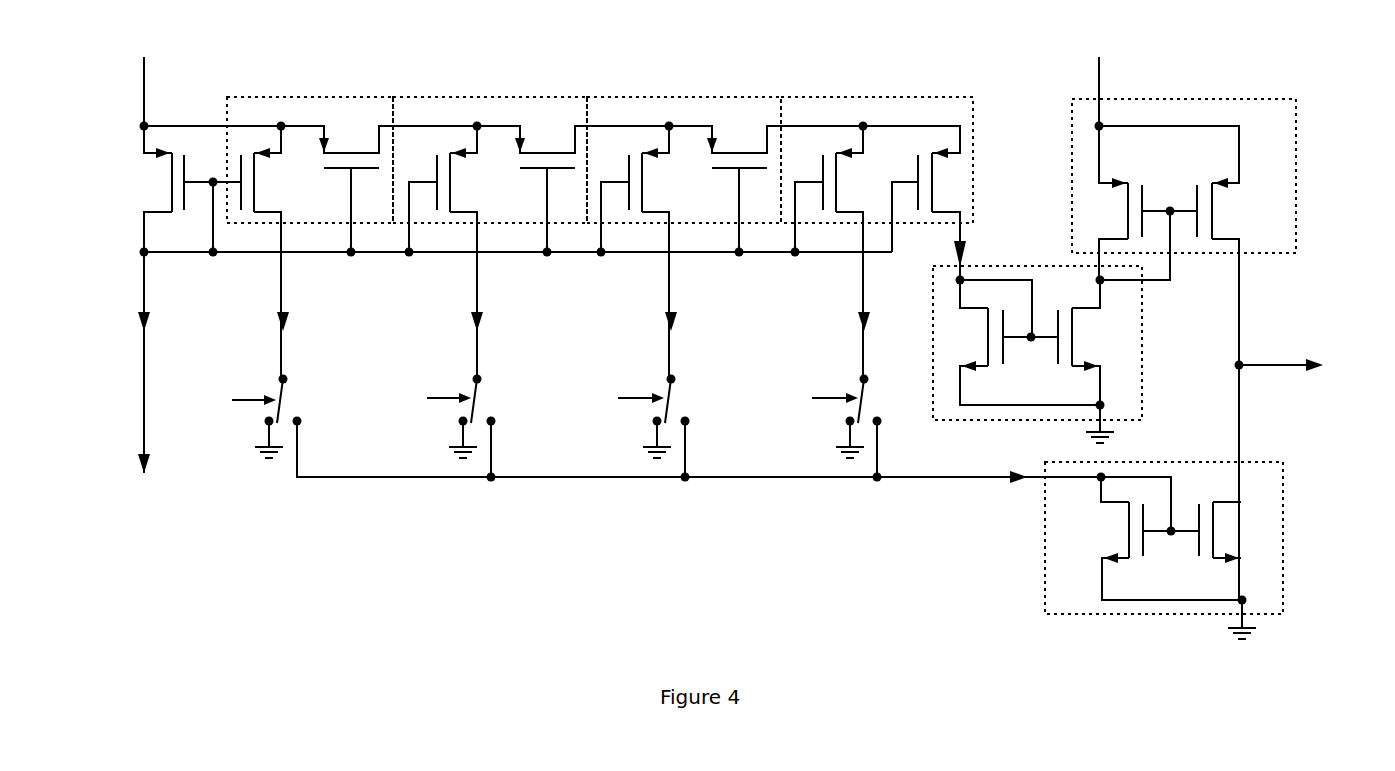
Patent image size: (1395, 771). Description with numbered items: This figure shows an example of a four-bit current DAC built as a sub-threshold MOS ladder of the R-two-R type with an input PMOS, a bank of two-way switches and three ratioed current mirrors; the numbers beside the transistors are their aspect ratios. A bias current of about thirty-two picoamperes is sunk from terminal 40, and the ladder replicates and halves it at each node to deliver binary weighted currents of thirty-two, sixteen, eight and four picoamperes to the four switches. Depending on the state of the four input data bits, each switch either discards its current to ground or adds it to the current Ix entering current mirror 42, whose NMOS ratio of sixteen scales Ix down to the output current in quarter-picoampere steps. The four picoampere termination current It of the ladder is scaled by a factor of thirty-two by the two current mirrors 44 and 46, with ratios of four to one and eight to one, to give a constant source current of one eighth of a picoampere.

The terminal 40 is at (128, 255).
The current mirror 42 is at (1285, 525).
The current mirror 44 is at (1142, 328).
The current mirror 46 is at (1297, 160).